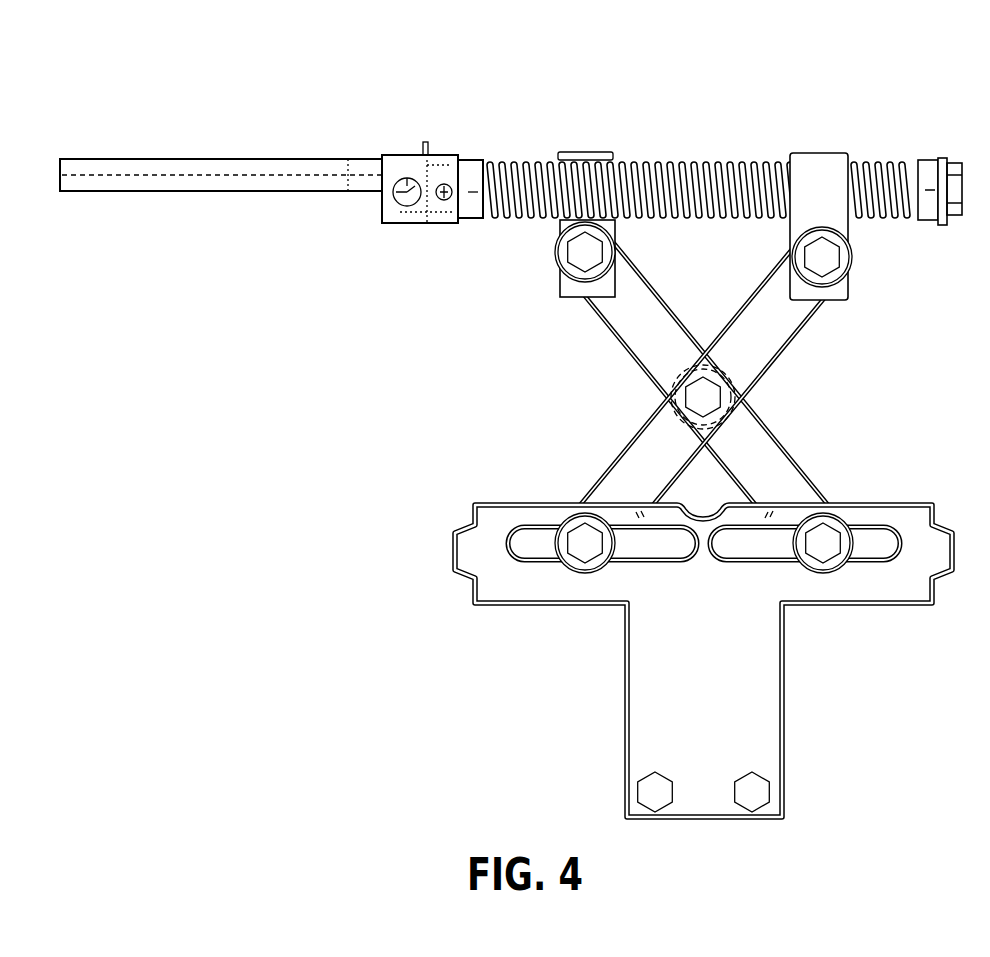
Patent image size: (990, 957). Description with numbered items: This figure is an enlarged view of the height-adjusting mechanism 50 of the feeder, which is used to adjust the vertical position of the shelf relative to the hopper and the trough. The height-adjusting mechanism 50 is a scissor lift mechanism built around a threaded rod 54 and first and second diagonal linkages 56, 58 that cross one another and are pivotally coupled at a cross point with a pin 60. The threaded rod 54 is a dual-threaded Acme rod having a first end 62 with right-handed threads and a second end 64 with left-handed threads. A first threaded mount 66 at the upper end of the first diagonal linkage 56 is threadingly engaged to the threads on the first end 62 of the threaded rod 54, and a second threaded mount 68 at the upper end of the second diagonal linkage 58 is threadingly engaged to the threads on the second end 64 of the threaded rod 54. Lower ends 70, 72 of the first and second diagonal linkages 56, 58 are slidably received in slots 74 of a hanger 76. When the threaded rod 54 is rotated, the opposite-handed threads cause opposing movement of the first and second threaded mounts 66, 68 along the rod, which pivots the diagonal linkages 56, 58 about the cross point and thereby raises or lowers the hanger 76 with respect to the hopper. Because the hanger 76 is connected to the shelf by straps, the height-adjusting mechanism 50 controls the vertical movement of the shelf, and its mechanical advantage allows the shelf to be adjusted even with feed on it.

The height-adjusting mechanism 50 is at (521, 422).
The threaded rod 54 is at (700, 158).
The first diagonal linkage 56 is at (780, 355).
The second diagonal linkage 58 is at (795, 458).
The pin 60 is at (694, 402).
The first end 62 is at (515, 158).
The second end 64 is at (882, 222).
The first threaded mount 66 is at (815, 152).
The second threaded mount 68 is at (582, 152).
The lower end 70 is at (588, 487).
The lower end 72 is at (823, 496).
The slots 74 is at (532, 557).
The hanger 76 is at (782, 708).